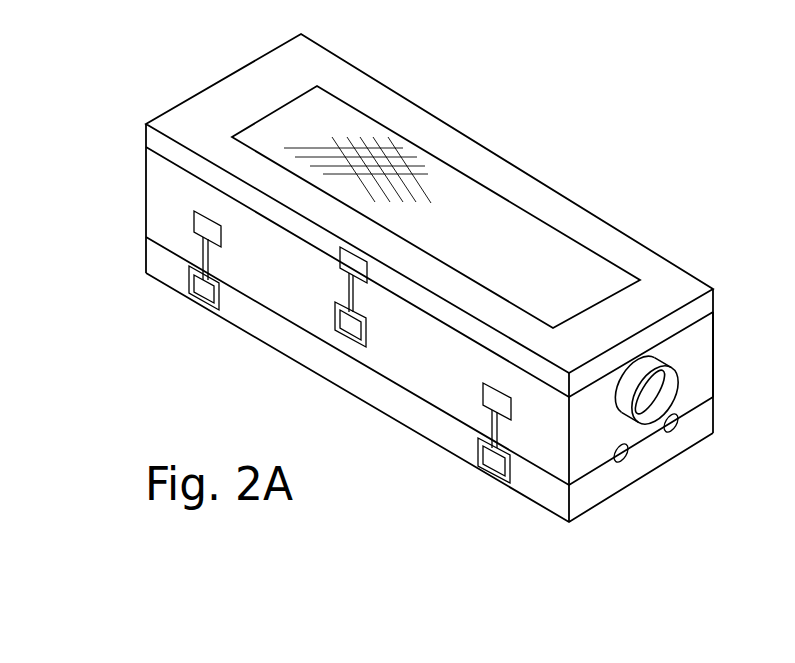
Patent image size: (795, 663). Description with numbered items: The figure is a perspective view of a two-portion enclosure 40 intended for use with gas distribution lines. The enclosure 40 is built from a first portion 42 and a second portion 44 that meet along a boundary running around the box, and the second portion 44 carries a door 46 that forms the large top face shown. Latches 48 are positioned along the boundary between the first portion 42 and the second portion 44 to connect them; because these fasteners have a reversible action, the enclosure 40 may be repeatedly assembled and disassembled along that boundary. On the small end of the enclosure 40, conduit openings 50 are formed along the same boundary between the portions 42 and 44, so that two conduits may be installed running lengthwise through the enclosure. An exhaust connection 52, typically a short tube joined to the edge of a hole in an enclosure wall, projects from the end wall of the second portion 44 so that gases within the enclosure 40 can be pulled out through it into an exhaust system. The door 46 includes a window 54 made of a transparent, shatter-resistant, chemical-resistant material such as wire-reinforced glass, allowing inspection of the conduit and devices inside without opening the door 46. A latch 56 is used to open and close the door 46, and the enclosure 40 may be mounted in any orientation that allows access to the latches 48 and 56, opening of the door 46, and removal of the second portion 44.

The enclosure 40 is at (588, 178).
The first portion 42 is at (698, 430).
The second portion 44 is at (697, 350).
The door 46 is at (703, 305).
The latches 48 is at (205, 292).
The conduit openings 50 is at (623, 457).
The exhaust connection 52 is at (678, 388).
The window 54 is at (513, 255).
The latch 56 is at (350, 328).